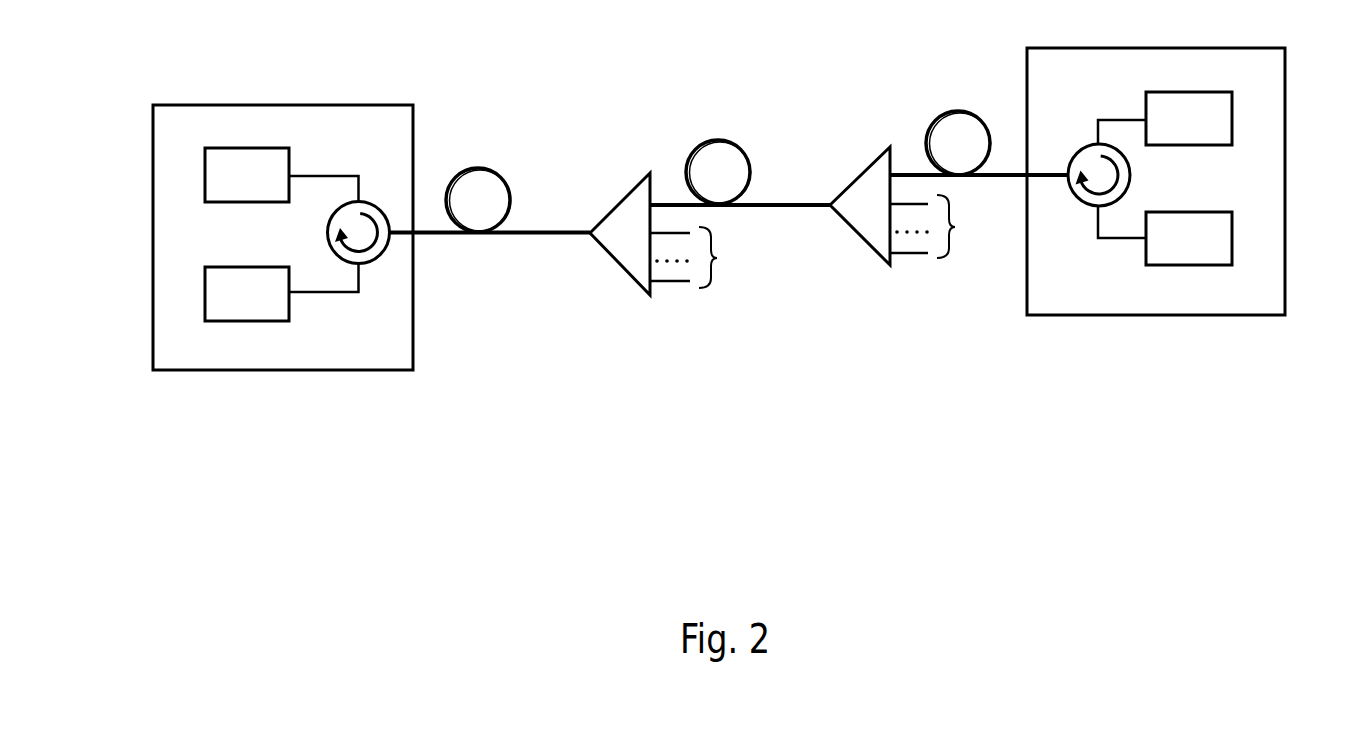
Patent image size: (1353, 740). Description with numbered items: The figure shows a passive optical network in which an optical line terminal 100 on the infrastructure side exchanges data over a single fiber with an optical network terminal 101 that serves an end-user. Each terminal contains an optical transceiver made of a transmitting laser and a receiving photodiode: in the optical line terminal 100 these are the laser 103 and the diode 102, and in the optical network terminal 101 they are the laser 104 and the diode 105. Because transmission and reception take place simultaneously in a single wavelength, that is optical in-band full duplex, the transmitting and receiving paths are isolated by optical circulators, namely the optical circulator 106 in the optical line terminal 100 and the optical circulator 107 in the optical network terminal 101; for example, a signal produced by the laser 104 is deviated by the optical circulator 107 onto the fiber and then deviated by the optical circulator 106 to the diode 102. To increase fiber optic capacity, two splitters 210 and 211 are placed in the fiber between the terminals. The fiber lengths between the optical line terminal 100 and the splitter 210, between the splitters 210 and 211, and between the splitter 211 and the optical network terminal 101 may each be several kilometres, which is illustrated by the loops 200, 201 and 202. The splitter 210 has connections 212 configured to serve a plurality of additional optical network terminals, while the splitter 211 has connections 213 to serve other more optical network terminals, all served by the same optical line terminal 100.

The optical line terminal 100 is at (163, 370).
The optical network terminal 101 is at (1248, 315).
The diode 102 is at (247, 294).
The laser 103 is at (247, 175).
The laser 104 is at (1189, 118).
The diode 105 is at (1189, 238).
The optical circulator 106 is at (332, 251).
The optical circulator 107 is at (1131, 166).
The loop 200 is at (478, 163).
The loop 201 is at (718, 132).
The loop 202 is at (957, 104).
The splitter 210 is at (620, 268).
The splitter 211 is at (862, 238).
The connections 212 is at (717, 258).
The connections 213 is at (955, 227).